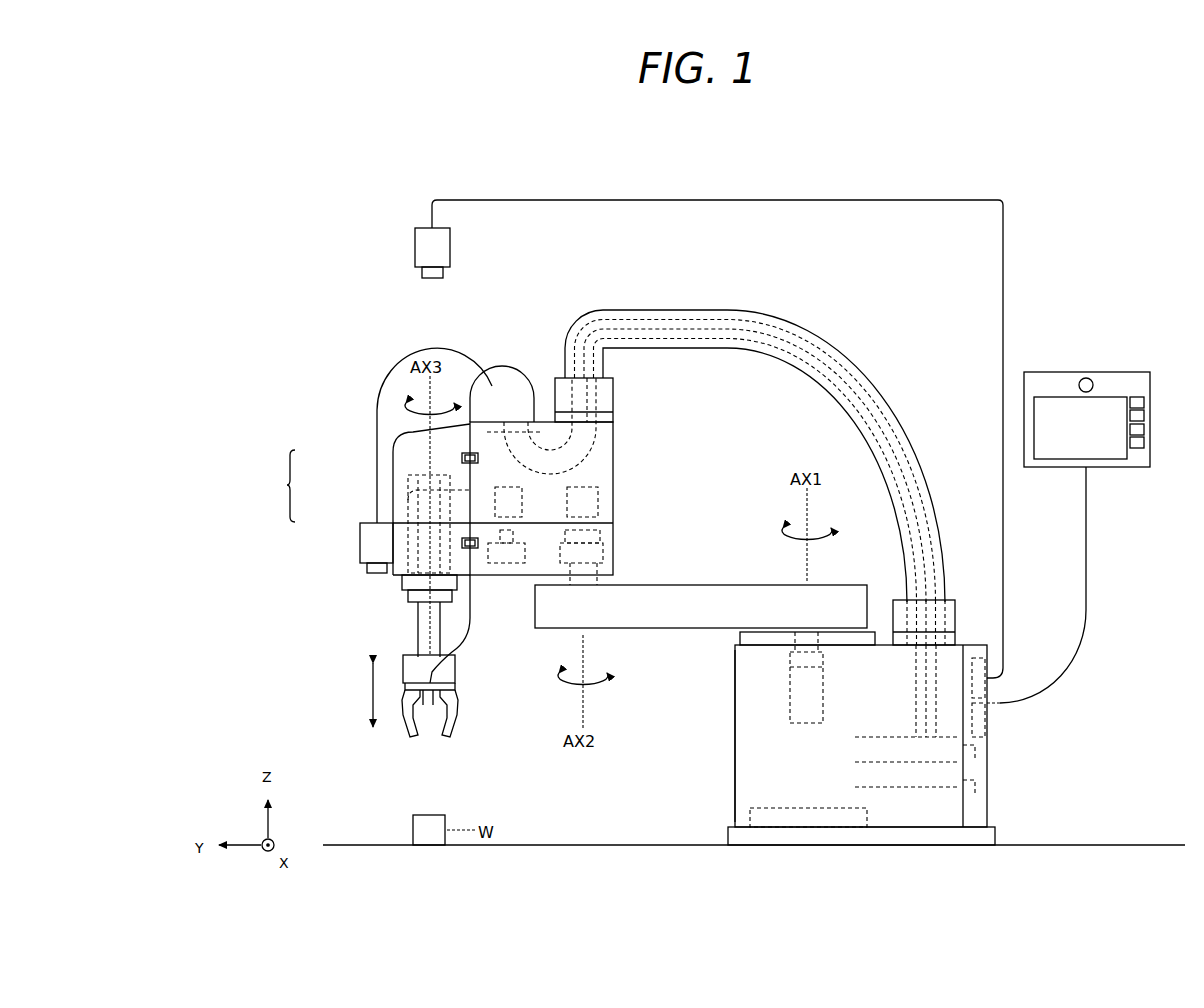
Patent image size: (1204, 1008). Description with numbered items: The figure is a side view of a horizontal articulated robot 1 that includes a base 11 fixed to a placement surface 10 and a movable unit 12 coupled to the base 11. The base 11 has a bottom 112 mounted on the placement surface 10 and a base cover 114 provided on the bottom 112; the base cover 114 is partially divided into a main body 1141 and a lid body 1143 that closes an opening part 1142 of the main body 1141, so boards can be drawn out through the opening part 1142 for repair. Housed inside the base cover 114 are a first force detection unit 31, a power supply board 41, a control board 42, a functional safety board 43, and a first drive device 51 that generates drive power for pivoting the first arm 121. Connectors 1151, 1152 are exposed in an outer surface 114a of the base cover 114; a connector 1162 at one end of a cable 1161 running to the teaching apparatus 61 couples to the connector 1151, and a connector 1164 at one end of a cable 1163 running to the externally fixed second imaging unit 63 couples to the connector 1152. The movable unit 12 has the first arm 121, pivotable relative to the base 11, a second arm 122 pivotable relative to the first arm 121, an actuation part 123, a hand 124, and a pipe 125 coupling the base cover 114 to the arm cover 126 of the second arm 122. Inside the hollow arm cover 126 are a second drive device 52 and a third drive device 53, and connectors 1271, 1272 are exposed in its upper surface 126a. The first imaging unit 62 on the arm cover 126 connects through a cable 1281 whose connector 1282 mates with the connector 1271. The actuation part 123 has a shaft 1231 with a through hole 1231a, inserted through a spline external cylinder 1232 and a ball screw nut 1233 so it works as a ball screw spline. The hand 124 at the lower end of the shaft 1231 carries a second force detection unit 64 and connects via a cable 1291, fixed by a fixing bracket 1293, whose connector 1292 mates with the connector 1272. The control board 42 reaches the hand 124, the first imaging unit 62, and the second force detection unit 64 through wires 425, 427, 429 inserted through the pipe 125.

The robot 1 is at (1032, 175).
The placement surface 10 is at (1125, 843).
The base 11 is at (683, 777).
The movable unit 12 is at (830, 324).
The first force detection unit 31 is at (870, 812).
The power supply board 41 is at (855, 788).
The control board 42 is at (855, 738).
The functional safety board 43 is at (855, 763).
The first drive device 51 is at (832, 698).
The second drive device 52 is at (605, 508).
The third drive device 53 is at (521, 513).
The teaching apparatus 61 is at (1152, 420).
The first imaging unit 62 is at (358, 545).
The second imaging unit 63 is at (452, 250).
The second force detection unit 64 is at (457, 670).
The bottom 112 is at (727, 837).
The base cover 114 is at (728, 694).
The outer surface 114a is at (985, 813).
The first arm 121 is at (733, 600).
The second arm 122 is at (626, 414).
The actuation part 123 is at (275, 486).
The hand 124 is at (457, 710).
The pipe 125 is at (853, 380).
The arm cover 126 is at (614, 549).
The upper surface 126a is at (405, 432).
The wire 425 is at (600, 436).
The wire 427 is at (600, 455).
The wire 429 is at (600, 470).
The main body 1141 is at (752, 734).
The opening part 1142 is at (963, 752).
The lid body 1143 is at (968, 787).
The connector 1151 is at (978, 738).
The connector 1152 is at (947, 622).
The cable 1161 is at (1088, 548).
The connector 1162 is at (990, 708).
The cable 1163 is at (720, 203).
The connector 1164 is at (990, 672).
The shaft 1231 is at (392, 470).
The through hole 1231a is at (423, 628).
The spline external cylinder 1232 is at (392, 502).
The ball screw nut 1233 is at (360, 517).
The connector 1271 is at (512, 395).
The connector 1272 is at (550, 392).
The cable 1281 is at (381, 385).
The connector 1282 is at (466, 547).
The cable 1291 is at (472, 620).
The connector 1292 is at (537, 392).
The fixing bracket 1293 is at (477, 464).